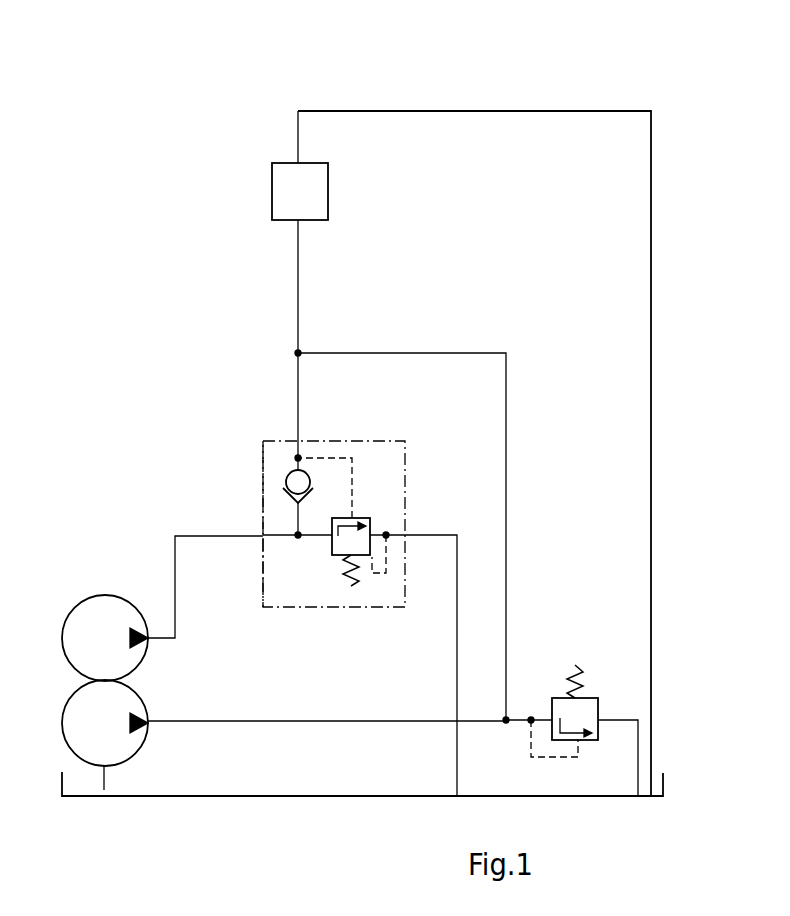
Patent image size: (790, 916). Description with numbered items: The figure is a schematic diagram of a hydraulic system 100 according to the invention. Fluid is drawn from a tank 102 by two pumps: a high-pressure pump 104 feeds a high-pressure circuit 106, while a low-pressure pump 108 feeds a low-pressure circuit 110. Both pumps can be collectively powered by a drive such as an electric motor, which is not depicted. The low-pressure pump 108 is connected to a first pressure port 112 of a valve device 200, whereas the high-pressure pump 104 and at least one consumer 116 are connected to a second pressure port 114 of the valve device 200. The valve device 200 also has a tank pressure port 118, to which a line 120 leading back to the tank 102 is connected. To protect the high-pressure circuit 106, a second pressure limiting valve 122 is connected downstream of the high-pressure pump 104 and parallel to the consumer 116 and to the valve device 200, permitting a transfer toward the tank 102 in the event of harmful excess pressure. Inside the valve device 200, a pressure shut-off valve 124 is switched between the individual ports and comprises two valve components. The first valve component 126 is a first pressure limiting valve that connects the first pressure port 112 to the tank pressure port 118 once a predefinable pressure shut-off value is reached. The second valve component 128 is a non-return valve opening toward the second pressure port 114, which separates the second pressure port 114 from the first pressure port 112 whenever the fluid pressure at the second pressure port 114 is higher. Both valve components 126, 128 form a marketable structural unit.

The hydraulic system 100 is at (655, 162).
The tank 102 is at (202, 797).
The high-pressure pump 104 is at (62, 723).
The high-pressure circuit 106 is at (212, 721).
The low-pressure pump 108 is at (75, 618).
The low-pressure circuit 110 is at (175, 565).
The first pressure port 112 is at (263, 535).
The second pressure port 114 is at (290, 425).
The consumer 116 is at (272, 183).
The tank pressure port 118 is at (405, 535).
The line 120 is at (457, 633).
The second pressure limiting valve 122 is at (588, 698).
The pressure shut-off valve 124 is at (312, 607).
The first valve component 126 is at (370, 518).
The second valve component 128 is at (305, 468).
The valve device 200 is at (263, 490).